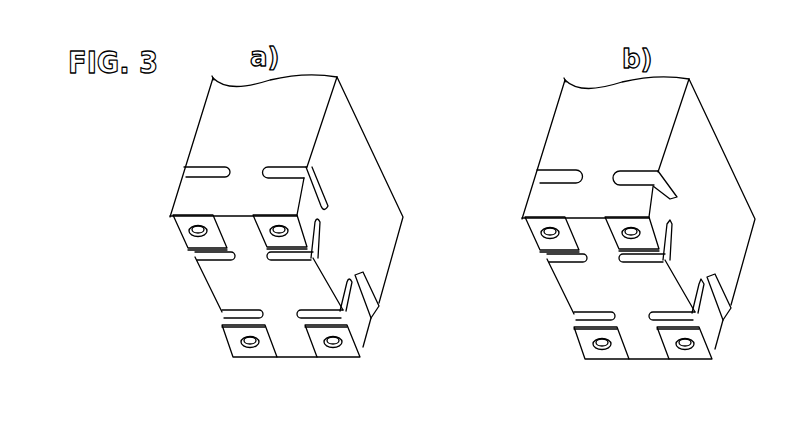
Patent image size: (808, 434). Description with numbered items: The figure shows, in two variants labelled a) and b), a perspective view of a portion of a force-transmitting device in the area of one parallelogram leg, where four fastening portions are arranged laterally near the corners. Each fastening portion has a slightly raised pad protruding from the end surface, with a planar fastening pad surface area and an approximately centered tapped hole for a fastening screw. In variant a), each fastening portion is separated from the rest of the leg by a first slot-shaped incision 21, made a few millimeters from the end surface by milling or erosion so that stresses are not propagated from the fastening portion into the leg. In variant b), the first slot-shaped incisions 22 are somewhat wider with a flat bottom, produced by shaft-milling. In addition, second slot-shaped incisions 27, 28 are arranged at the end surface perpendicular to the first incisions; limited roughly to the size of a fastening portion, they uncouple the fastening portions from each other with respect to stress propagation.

The first slot-shaped incision 21 is at (207, 173).
The first slot-shaped incision 22 is at (560, 176).
The second slot-shaped incision 27 is at (208, 260).
The second slot-shaped incision 28 is at (565, 263).